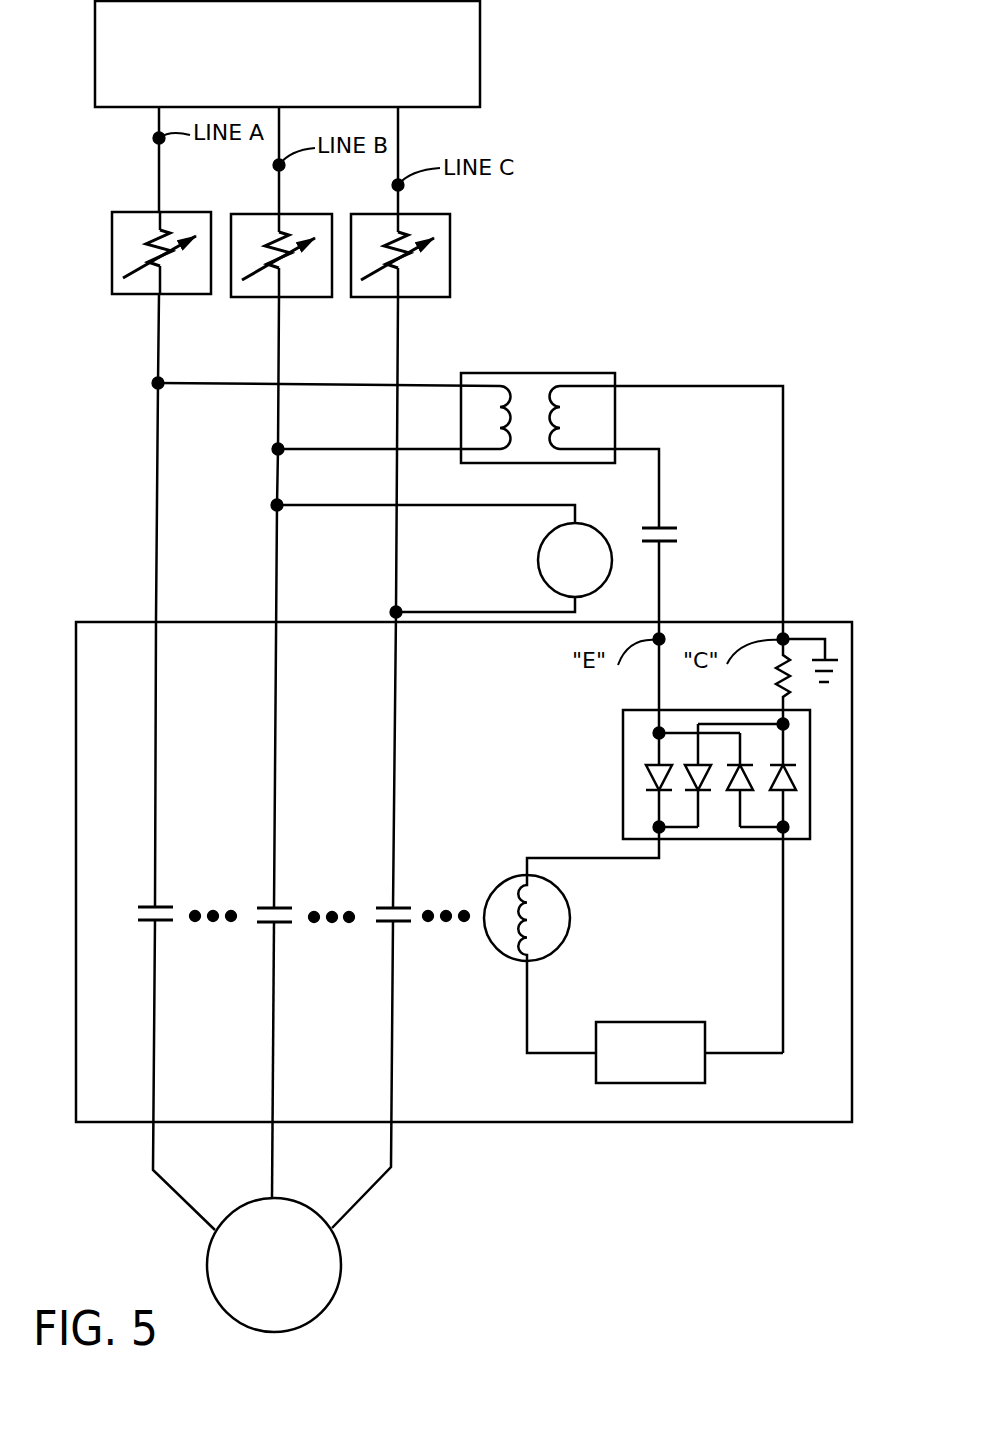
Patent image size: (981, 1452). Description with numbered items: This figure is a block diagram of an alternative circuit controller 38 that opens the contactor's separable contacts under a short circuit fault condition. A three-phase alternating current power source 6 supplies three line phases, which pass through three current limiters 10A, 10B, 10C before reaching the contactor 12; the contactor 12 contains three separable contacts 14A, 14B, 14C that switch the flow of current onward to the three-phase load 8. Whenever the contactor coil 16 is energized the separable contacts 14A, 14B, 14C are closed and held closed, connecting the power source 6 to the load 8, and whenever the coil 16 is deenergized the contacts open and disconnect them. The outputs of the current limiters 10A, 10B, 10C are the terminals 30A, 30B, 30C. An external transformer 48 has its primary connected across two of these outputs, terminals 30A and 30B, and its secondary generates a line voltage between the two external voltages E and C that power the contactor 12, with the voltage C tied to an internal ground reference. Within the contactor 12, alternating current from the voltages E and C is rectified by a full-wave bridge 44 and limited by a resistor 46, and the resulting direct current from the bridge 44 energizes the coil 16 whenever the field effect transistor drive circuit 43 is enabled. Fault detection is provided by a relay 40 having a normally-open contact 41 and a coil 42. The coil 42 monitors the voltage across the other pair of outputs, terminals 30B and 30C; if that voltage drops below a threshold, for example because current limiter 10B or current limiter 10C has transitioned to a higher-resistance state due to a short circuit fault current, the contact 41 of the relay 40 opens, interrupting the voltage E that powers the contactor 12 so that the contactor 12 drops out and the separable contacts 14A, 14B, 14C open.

The three-phase alternating current power source 6 is at (473, 62).
The three-phase AC load 8 is at (330, 1268).
The current limiter 10A is at (190, 295).
The current limiter 10B is at (309, 297).
The current limiter 10C is at (431, 297).
The contactor 12 is at (615, 1122).
The separable contact 14A is at (157, 905).
The separable contact 14B is at (275, 906).
The separable contact 14C is at (394, 906).
The contactor coil 16 is at (558, 918).
The terminal 30A is at (161, 297).
The terminal 30B is at (281, 297).
The terminal 30C is at (400, 297).
The circuit controller 38 is at (125, 352).
The relay 40 is at (515, 531).
The normally-open contact 41 is at (673, 543).
The coil 42 is at (540, 553).
The field effect transistor drive circuit 43 is at (660, 1025).
The full-wave bridge 44 is at (623, 727).
The resistor 46 is at (776, 683).
The external transformer 48 is at (585, 373).